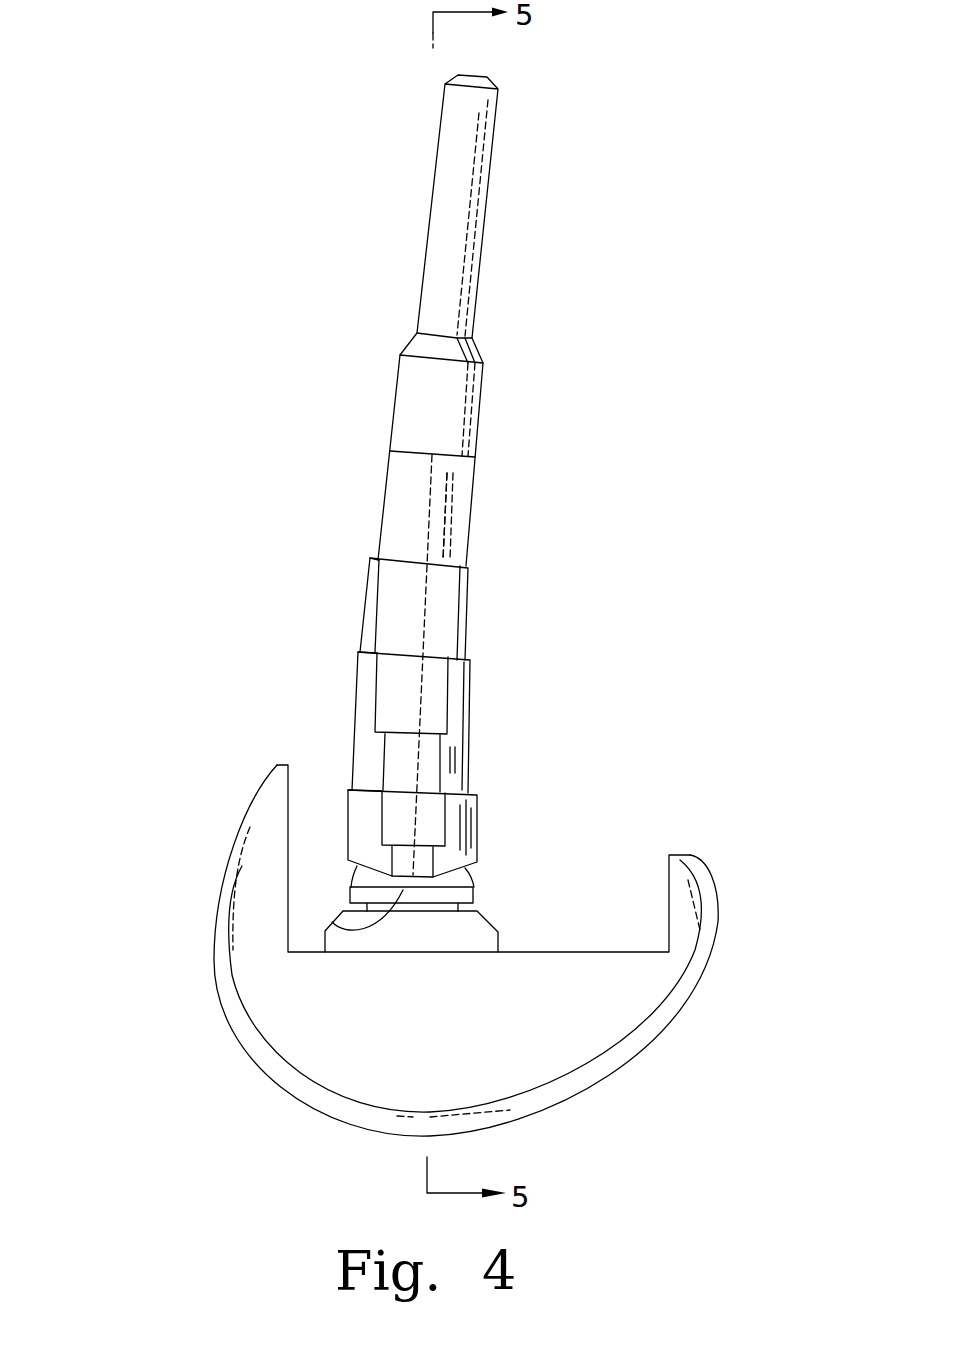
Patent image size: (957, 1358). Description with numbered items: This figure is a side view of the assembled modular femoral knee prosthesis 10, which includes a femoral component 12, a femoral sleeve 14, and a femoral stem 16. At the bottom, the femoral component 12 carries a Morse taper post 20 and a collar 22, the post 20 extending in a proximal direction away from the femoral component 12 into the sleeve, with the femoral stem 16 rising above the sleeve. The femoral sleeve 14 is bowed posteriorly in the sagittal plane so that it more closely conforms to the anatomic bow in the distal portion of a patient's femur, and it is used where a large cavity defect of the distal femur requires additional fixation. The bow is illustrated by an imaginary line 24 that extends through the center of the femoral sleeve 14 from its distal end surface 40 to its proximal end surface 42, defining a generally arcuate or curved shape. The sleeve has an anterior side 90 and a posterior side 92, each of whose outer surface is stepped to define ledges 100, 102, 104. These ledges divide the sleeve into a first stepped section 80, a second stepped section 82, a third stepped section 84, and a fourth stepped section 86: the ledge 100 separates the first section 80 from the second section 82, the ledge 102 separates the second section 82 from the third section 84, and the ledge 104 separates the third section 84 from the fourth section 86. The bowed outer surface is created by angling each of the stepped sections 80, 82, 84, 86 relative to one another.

The modular femoral knee prosthesis 10 is at (684, 118).
The femoral component 12 is at (248, 1051).
The femoral sleeve 14 is at (338, 690).
The femoral stem 16 is at (528, 244).
The Morse taper post 20 is at (468, 881).
The collar 22 is at (482, 932).
The imaginary line 24 is at (425, 522).
The distal end surface 40 is at (334, 922).
The proximal end surface 42 is at (450, 457).
The first stepped section 80 is at (460, 832).
The second stepped section 82 is at (458, 712).
The third stepped section 84 is at (460, 600).
The fourth stepped section 86 is at (465, 533).
The anterior side 90 is at (308, 561).
The posterior side 92 is at (508, 644).
The ledge 100 is at (470, 788).
The ledge 102 is at (362, 650).
The ledge 104 is at (378, 556).